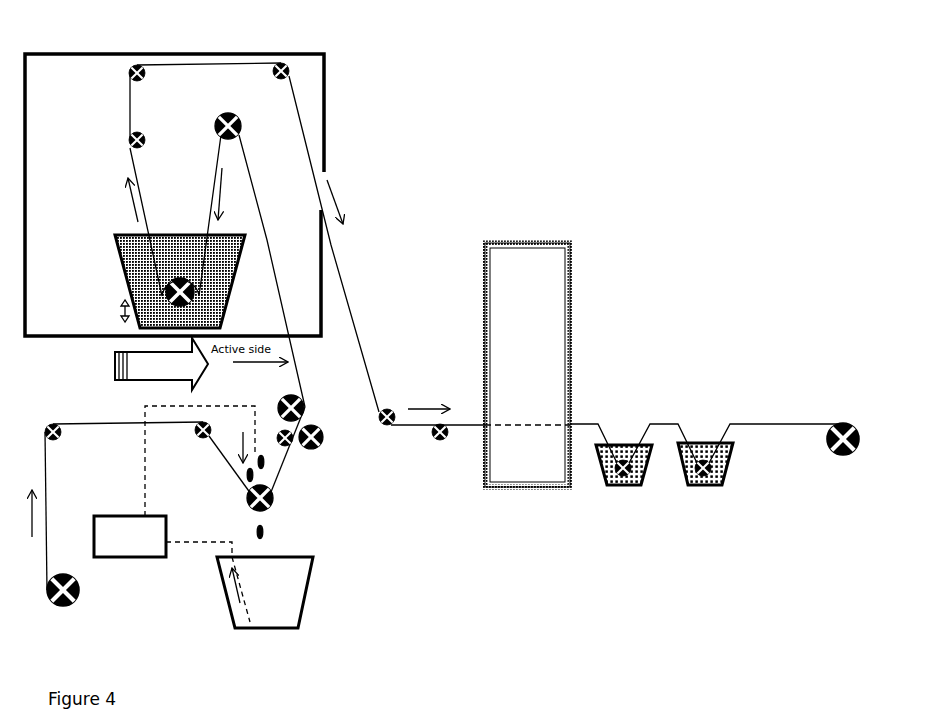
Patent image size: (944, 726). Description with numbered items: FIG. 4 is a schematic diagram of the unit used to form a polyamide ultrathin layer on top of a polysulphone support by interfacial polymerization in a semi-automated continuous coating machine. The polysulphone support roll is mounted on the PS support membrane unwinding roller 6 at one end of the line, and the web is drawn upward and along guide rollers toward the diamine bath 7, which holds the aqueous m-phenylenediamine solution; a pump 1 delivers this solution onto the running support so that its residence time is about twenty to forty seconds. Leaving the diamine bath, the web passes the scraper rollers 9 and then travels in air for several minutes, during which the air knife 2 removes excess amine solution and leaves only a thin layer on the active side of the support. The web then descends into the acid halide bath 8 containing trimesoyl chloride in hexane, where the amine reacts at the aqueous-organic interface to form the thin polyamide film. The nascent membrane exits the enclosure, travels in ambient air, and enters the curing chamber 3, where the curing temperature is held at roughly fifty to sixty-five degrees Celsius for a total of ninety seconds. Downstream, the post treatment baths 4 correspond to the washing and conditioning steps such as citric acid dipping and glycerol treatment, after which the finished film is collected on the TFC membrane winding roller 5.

The pump 1 is at (130, 536).
The air knife 2 is at (161, 364).
The curing chamber 3 is at (531, 381).
The post treatment baths 4 is at (664, 481).
The TFC membrane roll 5 is at (849, 475).
The PS support membrane roll 6 is at (70, 611).
The diamine trough 7 is at (265, 592).
The acid halide trough 8 is at (180, 281).
The scraper rollers 9 is at (291, 450).